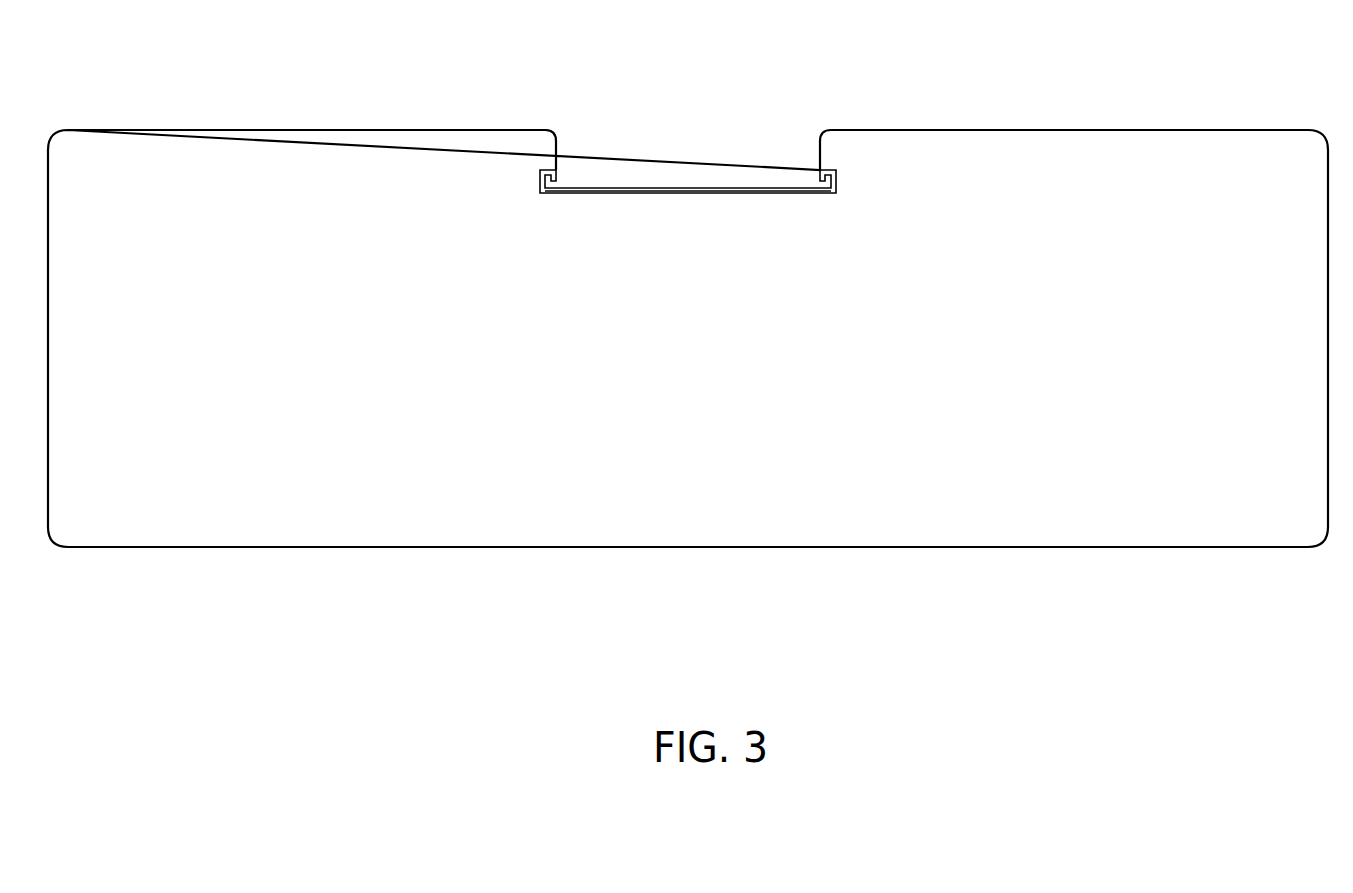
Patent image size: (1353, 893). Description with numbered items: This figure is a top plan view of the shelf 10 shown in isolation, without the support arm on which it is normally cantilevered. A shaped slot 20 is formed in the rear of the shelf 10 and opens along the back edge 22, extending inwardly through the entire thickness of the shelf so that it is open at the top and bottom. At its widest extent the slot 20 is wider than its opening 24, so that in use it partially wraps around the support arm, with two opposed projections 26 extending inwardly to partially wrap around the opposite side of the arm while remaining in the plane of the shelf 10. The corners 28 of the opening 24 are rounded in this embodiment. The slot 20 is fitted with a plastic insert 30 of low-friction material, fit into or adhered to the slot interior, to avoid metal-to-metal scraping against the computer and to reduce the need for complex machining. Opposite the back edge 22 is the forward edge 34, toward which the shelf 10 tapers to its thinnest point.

The shelf 10 is at (343, 129).
The slot 20 is at (651, 191).
The back edge 22 is at (1049, 130).
The opening 24 is at (767, 168).
The opposed projections 26 is at (548, 150).
The corners 28 is at (553, 146).
The plastic insert 30 is at (714, 192).
The forward edge 34 is at (862, 549).